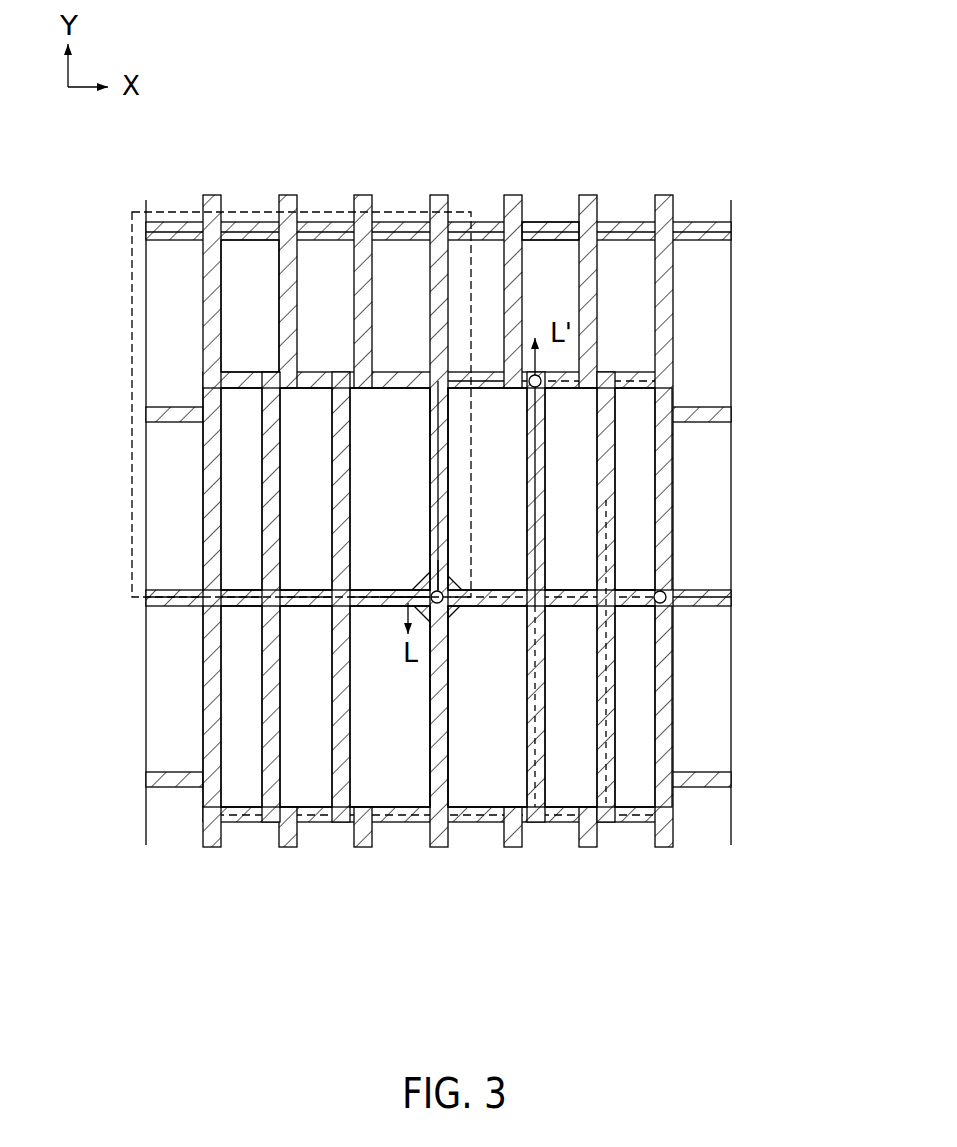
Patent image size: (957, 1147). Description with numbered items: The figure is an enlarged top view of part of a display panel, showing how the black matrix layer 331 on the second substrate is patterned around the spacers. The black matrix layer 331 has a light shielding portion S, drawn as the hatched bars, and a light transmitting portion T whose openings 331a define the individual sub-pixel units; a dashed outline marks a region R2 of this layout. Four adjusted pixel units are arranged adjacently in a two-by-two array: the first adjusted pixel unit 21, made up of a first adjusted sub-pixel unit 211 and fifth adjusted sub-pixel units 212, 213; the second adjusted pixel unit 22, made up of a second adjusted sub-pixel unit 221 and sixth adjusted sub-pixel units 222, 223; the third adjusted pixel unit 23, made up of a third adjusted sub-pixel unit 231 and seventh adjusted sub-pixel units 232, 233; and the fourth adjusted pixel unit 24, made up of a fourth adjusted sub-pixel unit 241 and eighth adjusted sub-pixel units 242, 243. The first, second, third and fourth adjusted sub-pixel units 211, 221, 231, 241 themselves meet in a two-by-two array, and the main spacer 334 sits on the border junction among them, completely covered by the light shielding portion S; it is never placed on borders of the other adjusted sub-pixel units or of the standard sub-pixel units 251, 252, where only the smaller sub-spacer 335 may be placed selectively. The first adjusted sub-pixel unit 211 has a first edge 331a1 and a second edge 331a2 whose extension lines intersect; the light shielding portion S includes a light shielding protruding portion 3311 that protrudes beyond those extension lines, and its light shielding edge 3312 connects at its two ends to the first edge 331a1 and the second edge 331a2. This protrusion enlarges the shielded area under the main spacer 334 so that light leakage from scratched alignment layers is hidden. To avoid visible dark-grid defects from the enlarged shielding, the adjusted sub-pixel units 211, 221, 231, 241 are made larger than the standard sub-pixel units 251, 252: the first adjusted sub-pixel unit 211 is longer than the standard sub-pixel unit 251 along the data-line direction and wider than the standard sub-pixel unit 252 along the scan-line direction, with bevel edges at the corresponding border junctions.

The first adjusted pixel unit 21 is at (58, 428).
The first adjusted sub-pixel unit 211 is at (365, 445).
The fifth adjusted sub-pixel unit 212 is at (305, 497).
The fifth adjusted sub-pixel unit 213 is at (250, 540).
The second adjusted pixel unit 22 is at (798, 428).
The second adjusted sub-pixel unit 221 is at (520, 445).
The sixth adjusted sub-pixel unit 222 is at (580, 497).
The sixth adjusted sub-pixel unit 223 is at (630, 535).
The third adjusted pixel unit 23 is at (58, 628).
The third adjusted sub-pixel unit 231 is at (360, 650).
The seventh adjusted sub-pixel unit 232 is at (305, 697).
The seventh adjusted sub-pixel unit 233 is at (250, 735).
The fourth adjusted pixel unit 24 is at (798, 628).
The fourth adjusted sub-pixel unit 241 is at (495, 640).
The eighth adjusted sub-pixel unit 242 is at (580, 692).
The eighth adjusted sub-pixel unit 243 is at (635, 735).
The standard sub-pixel unit 251 is at (165, 420).
The standard sub-pixel unit 252 is at (240, 305).
The black matrix layer 331 is at (733, 226).
The openings 331a is at (712, 250).
The first edge 331a1 is at (406, 602).
The second edge 331a2 is at (440, 566).
The light shielding protruding portion 3311 is at (417, 592).
The light shielding edge 3312 is at (425, 578).
The main spacer 334 is at (447, 612).
The sub-spacer 335 is at (573, 366).
The second region R2 is at (405, 212).
The light transmitting portion T is at (550, 210).
The light shielding portion S is at (660, 207).